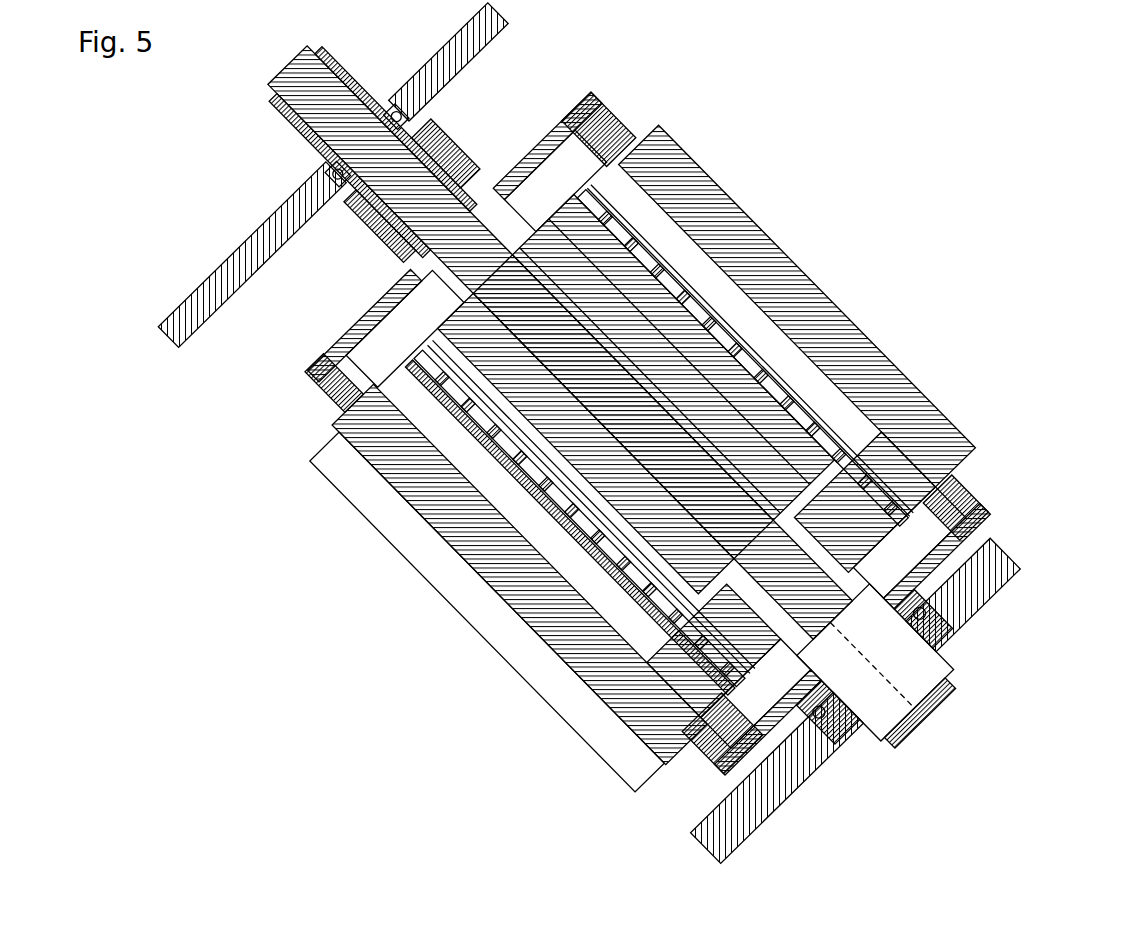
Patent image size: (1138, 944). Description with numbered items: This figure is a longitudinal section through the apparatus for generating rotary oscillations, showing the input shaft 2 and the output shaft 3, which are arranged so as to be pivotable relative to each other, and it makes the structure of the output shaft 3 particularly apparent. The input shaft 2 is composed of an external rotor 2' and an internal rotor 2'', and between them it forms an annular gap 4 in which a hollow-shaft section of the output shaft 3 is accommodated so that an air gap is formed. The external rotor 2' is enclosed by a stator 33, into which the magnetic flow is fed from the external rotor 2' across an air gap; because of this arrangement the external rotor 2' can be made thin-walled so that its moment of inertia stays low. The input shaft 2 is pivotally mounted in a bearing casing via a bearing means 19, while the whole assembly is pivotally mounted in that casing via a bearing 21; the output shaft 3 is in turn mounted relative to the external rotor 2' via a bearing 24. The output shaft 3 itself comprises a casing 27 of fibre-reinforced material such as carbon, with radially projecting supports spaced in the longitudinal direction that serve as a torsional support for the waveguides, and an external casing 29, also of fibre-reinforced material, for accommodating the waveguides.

The input shaft 2 is at (497, 342).
The external rotor 2' is at (588, 208).
The internal rotor 2'' is at (581, 183).
The output shaft 3 is at (873, 472).
The annular gap 4 is at (843, 430).
The bearing means 19 is at (325, 175).
The bearing 21 is at (965, 640).
The bearing 24 is at (954, 586).
The casing 27 is at (783, 392).
The external casing 29 is at (605, 215).
The stator 33 is at (760, 275).